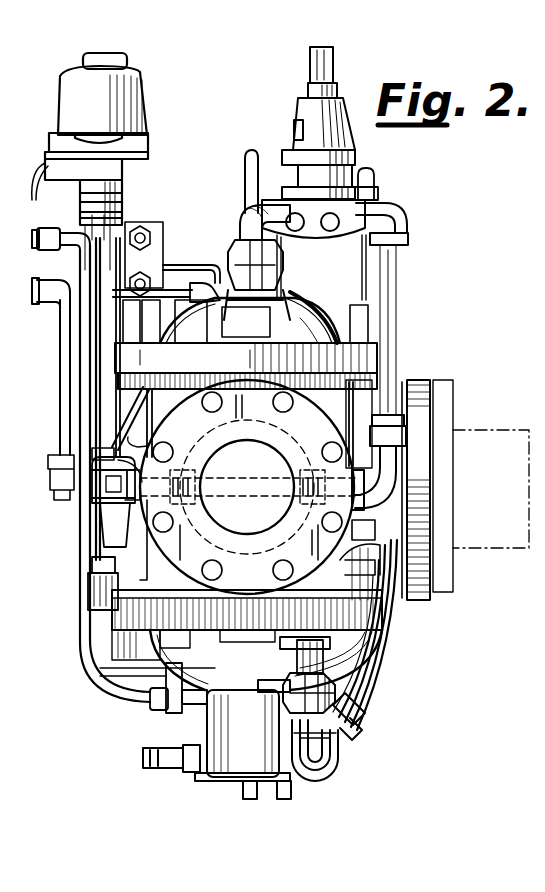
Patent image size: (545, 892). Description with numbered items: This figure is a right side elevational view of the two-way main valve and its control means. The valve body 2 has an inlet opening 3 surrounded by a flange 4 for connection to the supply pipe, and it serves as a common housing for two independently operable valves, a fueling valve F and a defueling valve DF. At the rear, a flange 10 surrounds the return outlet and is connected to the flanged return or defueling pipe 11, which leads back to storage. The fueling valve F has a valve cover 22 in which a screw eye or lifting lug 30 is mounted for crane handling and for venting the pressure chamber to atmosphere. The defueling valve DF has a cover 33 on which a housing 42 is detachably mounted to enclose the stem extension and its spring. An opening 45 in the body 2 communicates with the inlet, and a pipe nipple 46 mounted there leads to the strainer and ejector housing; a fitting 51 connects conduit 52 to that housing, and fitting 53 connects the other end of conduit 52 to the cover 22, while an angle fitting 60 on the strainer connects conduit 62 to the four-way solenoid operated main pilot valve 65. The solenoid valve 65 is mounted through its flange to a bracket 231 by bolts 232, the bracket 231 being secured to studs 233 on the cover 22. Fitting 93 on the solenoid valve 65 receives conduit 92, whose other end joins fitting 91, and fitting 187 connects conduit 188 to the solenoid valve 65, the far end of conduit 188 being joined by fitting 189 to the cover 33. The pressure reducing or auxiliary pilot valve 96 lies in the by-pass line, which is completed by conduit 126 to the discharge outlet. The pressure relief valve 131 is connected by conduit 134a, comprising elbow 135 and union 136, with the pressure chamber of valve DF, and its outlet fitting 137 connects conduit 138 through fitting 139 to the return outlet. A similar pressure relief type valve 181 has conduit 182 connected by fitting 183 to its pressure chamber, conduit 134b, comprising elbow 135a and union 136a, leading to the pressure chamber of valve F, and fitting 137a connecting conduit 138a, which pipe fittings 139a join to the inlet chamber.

The four-way solenoid operated main pilot valve 65 is at (145, 88).
The pressure relief type valve 181 is at (345, 97).
The fitting 183 is at (378, 178).
The fitting 137a is at (409, 222).
The screw eye or lifting lug 30 is at (249, 150).
The elbow 135a is at (240, 222).
The union 136a is at (232, 254).
The bolts 232 is at (146, 230).
The bracket 231 is at (164, 254).
The studs 233 is at (139, 275).
The fitting 53 is at (207, 264).
The conduit 52 is at (190, 292).
The fitting 187 is at (34, 238).
The conduit 188 is at (78, 612).
The fitting 189 is at (165, 712).
The fitting 93 is at (40, 306).
The conduit 92 is at (58, 368).
The fitting 91 is at (48, 478).
The conduit 134b is at (288, 305).
The conduit 182 is at (365, 312).
The valve cover 22 is at (342, 343).
The fueling valve F is at (304, 368).
The conduit 138a is at (398, 362).
The conduit 62 is at (126, 425).
The conduit 126 is at (152, 420).
The pipe nipple 46 is at (170, 465).
The opening 45 is at (197, 490).
The fitting 51 is at (90, 452).
The angle fitting 60 is at (112, 505).
The pressure reducing or auxiliary pilot valve 96 is at (106, 547).
The inlet opening 3 is at (240, 535).
The flange 4 is at (330, 553).
The body 2 is at (144, 576).
The defueling valve DF is at (118, 622).
The cover 33 is at (382, 628).
The conduit 138 is at (375, 684).
The conduit 134a is at (302, 684).
The union 136 is at (336, 700).
The fitting 137 is at (360, 750).
The elbow 135 is at (332, 768).
The housing 42 is at (206, 728).
The pressure relief valve 131 is at (206, 778).
The pipe fittings 139a is at (370, 522).
The fitting 139 is at (386, 537).
The flange 10 is at (419, 600).
The return or defueling pipe 11 is at (484, 430).